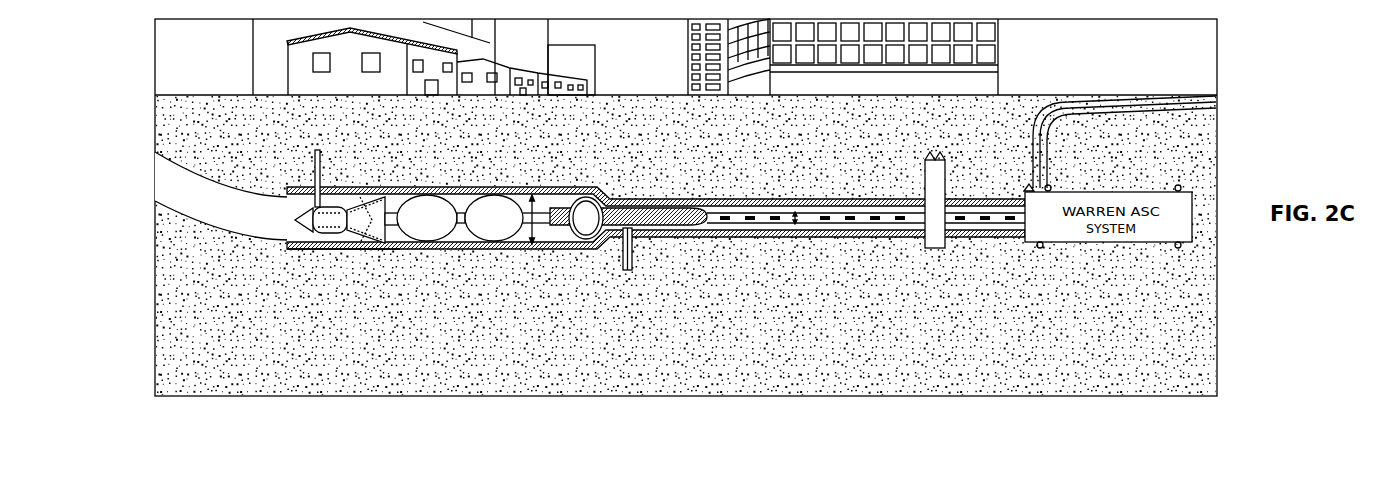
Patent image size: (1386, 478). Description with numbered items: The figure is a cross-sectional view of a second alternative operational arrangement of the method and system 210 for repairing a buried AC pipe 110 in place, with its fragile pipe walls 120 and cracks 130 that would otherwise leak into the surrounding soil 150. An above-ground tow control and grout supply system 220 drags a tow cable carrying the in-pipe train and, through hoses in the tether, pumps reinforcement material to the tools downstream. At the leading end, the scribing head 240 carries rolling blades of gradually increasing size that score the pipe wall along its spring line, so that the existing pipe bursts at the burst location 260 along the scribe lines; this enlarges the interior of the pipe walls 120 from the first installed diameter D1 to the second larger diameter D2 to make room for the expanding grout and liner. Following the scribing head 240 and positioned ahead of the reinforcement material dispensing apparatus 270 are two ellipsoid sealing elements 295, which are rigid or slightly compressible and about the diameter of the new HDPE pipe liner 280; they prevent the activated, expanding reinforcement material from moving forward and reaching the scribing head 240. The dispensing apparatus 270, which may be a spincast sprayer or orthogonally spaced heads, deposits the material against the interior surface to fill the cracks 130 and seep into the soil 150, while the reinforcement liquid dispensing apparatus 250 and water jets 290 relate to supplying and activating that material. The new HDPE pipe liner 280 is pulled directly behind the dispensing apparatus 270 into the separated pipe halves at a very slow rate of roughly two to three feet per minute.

The AC pipe 110 is at (740, 174).
The pipe walls 120 is at (848, 238).
The cracks 130 is at (720, 214).
The surrounding soil 150 is at (686, 245).
The method and system 210 is at (588, 173).
The tow control and grout supply system 220 is at (1058, 158).
The scribing head 240 is at (626, 271).
The reinforcement liquid dispensing apparatus 250 is at (321, 151).
The burst location 260 is at (581, 241).
The reinforcement material dispensing apparatus 270 is at (345, 251).
The HDPE pipe liner 280 is at (222, 201).
The water jets 290 is at (296, 219).
The sealing elements 295 is at (500, 231).
The first installed diameter D1 is at (800, 211).
The second larger diameter D2 is at (534, 196).